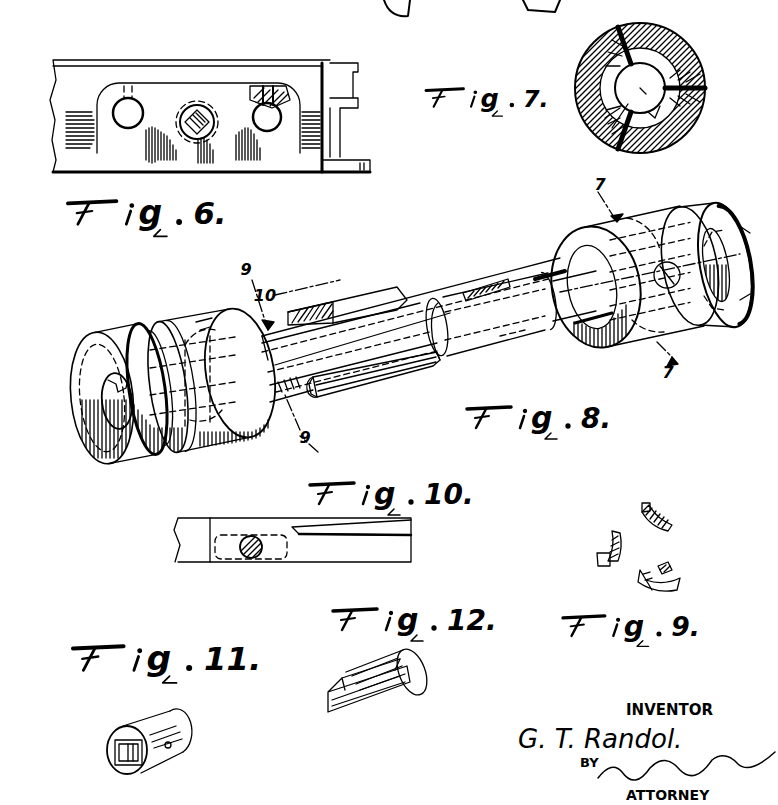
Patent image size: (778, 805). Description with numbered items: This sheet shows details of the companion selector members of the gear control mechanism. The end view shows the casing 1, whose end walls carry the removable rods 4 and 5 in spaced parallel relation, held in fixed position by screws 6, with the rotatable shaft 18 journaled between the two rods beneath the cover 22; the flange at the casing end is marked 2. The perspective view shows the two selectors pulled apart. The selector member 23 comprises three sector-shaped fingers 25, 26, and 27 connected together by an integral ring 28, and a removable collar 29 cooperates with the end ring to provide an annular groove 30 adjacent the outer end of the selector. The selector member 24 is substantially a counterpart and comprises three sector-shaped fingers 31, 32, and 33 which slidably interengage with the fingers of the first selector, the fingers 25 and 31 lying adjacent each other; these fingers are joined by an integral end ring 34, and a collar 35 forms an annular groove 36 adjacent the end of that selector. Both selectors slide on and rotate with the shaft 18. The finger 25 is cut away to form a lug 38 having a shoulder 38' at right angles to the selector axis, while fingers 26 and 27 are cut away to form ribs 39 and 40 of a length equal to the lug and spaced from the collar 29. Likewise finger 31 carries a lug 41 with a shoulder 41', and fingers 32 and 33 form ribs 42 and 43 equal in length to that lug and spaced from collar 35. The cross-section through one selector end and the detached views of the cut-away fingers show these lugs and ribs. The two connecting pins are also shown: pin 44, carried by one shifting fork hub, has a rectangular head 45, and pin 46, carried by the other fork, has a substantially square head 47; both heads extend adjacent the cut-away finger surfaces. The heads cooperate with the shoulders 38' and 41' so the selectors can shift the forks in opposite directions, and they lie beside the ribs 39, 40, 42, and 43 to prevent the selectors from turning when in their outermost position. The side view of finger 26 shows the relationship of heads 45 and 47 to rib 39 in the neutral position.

In FIG. 6, the casing 1 is at (333, 132).
In FIG. 6, the end flange 2 is at (372, 168).
In FIG. 6, the rod 4 is at (266, 124).
In FIG. 6, the rod 5 is at (130, 118).
In FIG. 6, the screws 6 is at (131, 96).
In FIG. 6, the rotatable shaft 18 is at (200, 114).
In FIG. 6, the cover 22 is at (298, 62).
In FIG. 8, the selector member 23 is at (214, 292).
In FIG. 8, the selector member 24 is at (583, 228).
In FIG. 8, the sector-shaped finger 25 is at (303, 380).
In FIG. 9, the sector-shaped finger 25 is at (670, 566).
In FIG. 8, the sector-shaped finger 26 is at (404, 302).
In FIG. 10, the sector-shaped finger 26 is at (390, 548).
In FIG. 9, the sector-shaped finger 26 is at (674, 524).
In FIG. 8, the sector-shaped finger 27 is at (296, 360).
In FIG. 9, the sector-shaped finger 27 is at (605, 536).
In FIG. 8, the integral ring 28 is at (131, 442).
In FIG. 8, the removable collar 29 is at (168, 320).
In FIG. 8, the annular groove 30 is at (140, 330).
In FIG. 7, the sector-shaped finger 31 is at (636, 130).
In FIG. 8, the sector-shaped finger 31 is at (592, 300).
In FIG. 7, the sector-shaped finger 32 is at (702, 68).
In FIG. 8, the sector-shaped finger 32 is at (455, 346).
In FIG. 7, the sector-shaped finger 33 is at (632, 40).
In FIG. 8, the sector-shaped finger 33 is at (491, 283).
In FIG. 8, the integral end ring 34 is at (731, 232).
In FIG. 7, the collar 35 is at (676, 34).
In FIG. 8, the collar 35 is at (649, 218).
In FIG. 8, the annular groove 36 is at (726, 312).
In FIG. 8, the lug 38 is at (376, 385).
In FIG. 9, the lug 38 is at (678, 582).
In FIG. 8, the shoulder 38' is at (340, 399).
In FIG. 9, the shoulder 38' is at (665, 598).
In FIG. 8, the rib 39 is at (370, 298).
In FIG. 10, the rib 39 is at (386, 527).
In FIG. 9, the rib 39 is at (650, 503).
In FIG. 9, the rib 40 is at (597, 562).
In FIG. 8, the lug 41 is at (544, 244).
In FIG. 8, the shoulder 41' is at (590, 350).
In FIG. 8, the rib 42 is at (520, 340).
In FIG. 8, the rib 43 is at (505, 284).
In FIG. 12, the pin 44 is at (422, 665).
In FIG. 10, the rectangular head 45 is at (226, 534).
In FIG. 12, the rectangular head 45 is at (390, 703).
In FIG. 11, the pin 46 is at (160, 727).
In FIG. 10, the square head 47 is at (254, 536).
In FIG. 11, the square head 47 is at (114, 746).